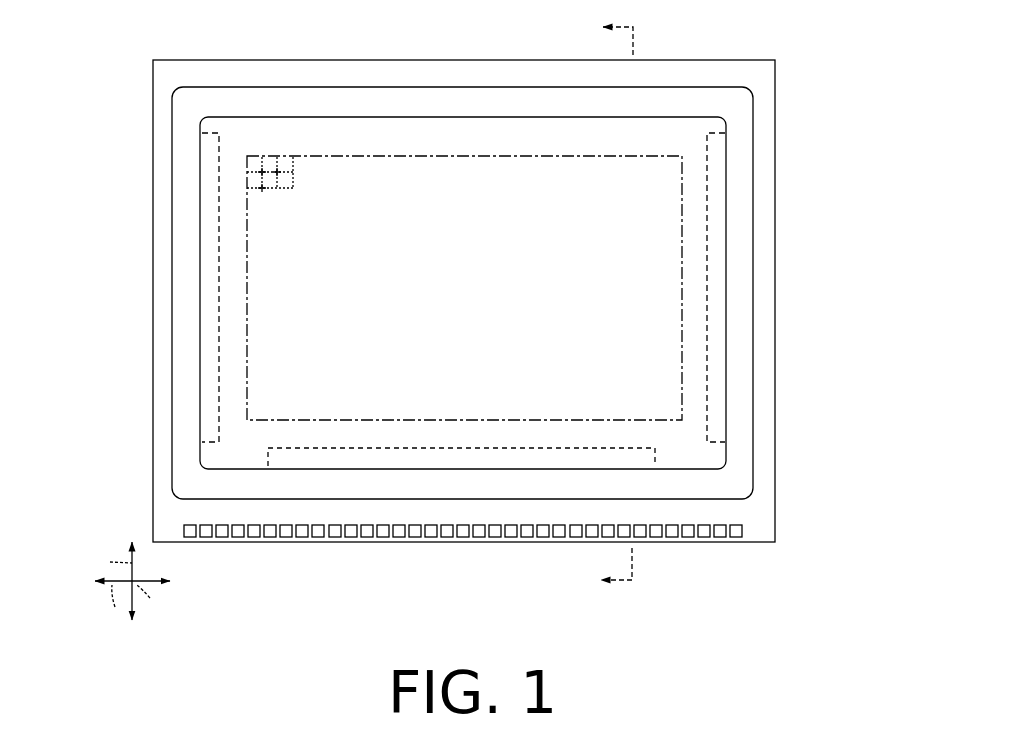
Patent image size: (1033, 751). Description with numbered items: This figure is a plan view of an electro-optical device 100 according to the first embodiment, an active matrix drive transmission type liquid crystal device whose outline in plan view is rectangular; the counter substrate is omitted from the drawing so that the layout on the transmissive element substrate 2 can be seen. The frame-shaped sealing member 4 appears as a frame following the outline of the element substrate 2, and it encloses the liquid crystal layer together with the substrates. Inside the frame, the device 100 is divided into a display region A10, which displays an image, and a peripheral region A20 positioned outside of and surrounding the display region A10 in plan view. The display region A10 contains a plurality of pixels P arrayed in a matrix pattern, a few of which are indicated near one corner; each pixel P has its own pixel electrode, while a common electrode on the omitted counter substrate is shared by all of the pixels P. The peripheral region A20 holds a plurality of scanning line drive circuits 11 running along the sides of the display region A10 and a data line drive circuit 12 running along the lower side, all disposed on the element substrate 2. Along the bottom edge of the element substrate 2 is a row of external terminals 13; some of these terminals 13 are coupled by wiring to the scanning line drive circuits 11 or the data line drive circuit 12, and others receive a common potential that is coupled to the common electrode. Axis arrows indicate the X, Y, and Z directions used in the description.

The electro-optical device 100 is at (728, 52).
The element substrate 2 is at (778, 92).
The sealing member 4 is at (748, 170).
The scanning line drive circuits 11 is at (222, 133).
The data line drive circuit 12 is at (657, 458).
The external terminals 13 is at (439, 538).
The pixels P is at (262, 193).
The display region A10 is at (682, 323).
The peripheral region A20 is at (643, 357).